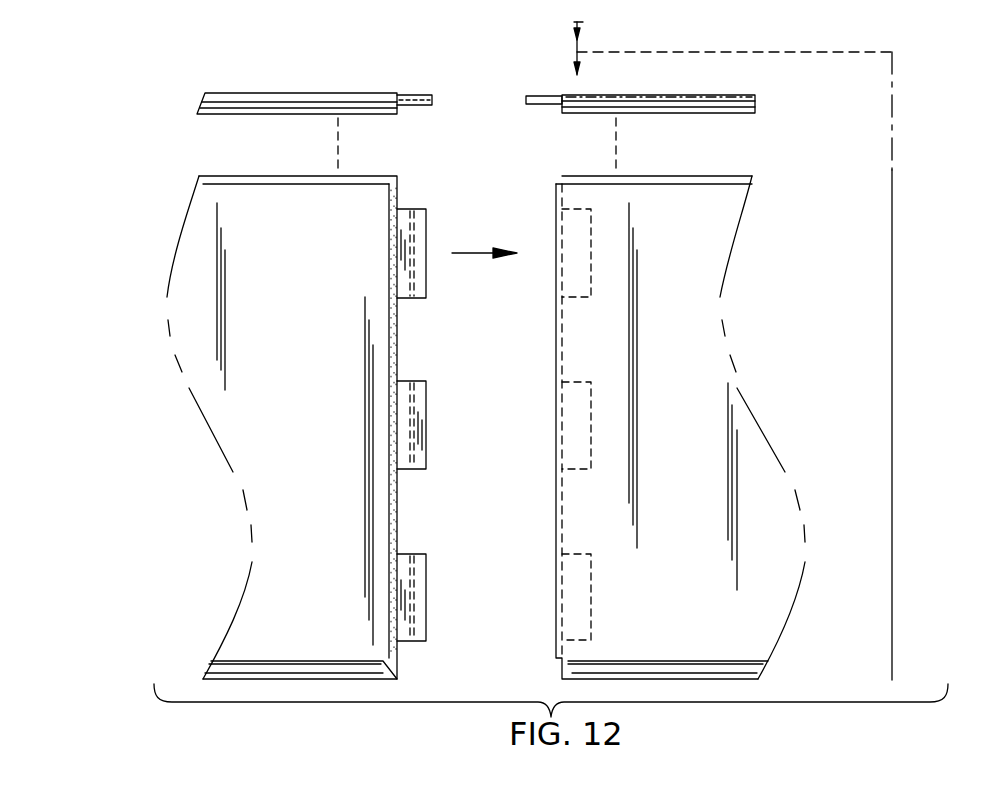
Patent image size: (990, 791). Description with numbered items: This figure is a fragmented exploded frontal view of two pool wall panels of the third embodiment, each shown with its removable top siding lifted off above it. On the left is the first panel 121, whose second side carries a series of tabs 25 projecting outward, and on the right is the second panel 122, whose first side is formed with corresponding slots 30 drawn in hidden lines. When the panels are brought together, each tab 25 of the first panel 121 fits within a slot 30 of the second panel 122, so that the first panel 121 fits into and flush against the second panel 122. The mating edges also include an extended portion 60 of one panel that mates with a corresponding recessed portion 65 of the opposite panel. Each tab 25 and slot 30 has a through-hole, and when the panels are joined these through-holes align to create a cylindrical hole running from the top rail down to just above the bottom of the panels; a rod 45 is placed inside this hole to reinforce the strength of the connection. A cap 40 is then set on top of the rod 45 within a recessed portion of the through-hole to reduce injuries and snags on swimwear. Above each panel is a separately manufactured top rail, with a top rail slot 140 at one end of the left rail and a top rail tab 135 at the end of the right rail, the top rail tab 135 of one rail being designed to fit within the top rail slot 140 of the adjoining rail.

The top rail slot 140 is at (413, 95).
The top rail tab 135 is at (531, 96).
The cap 40 is at (582, 22).
The slot 30 is at (562, 246).
The tab 25 is at (426, 282).
The extended portion 60 is at (558, 373).
The recessed portion 65 is at (393, 500).
The rod 45 is at (892, 275).
The first panel 121 is at (234, 449).
The second panel 122 is at (712, 415).